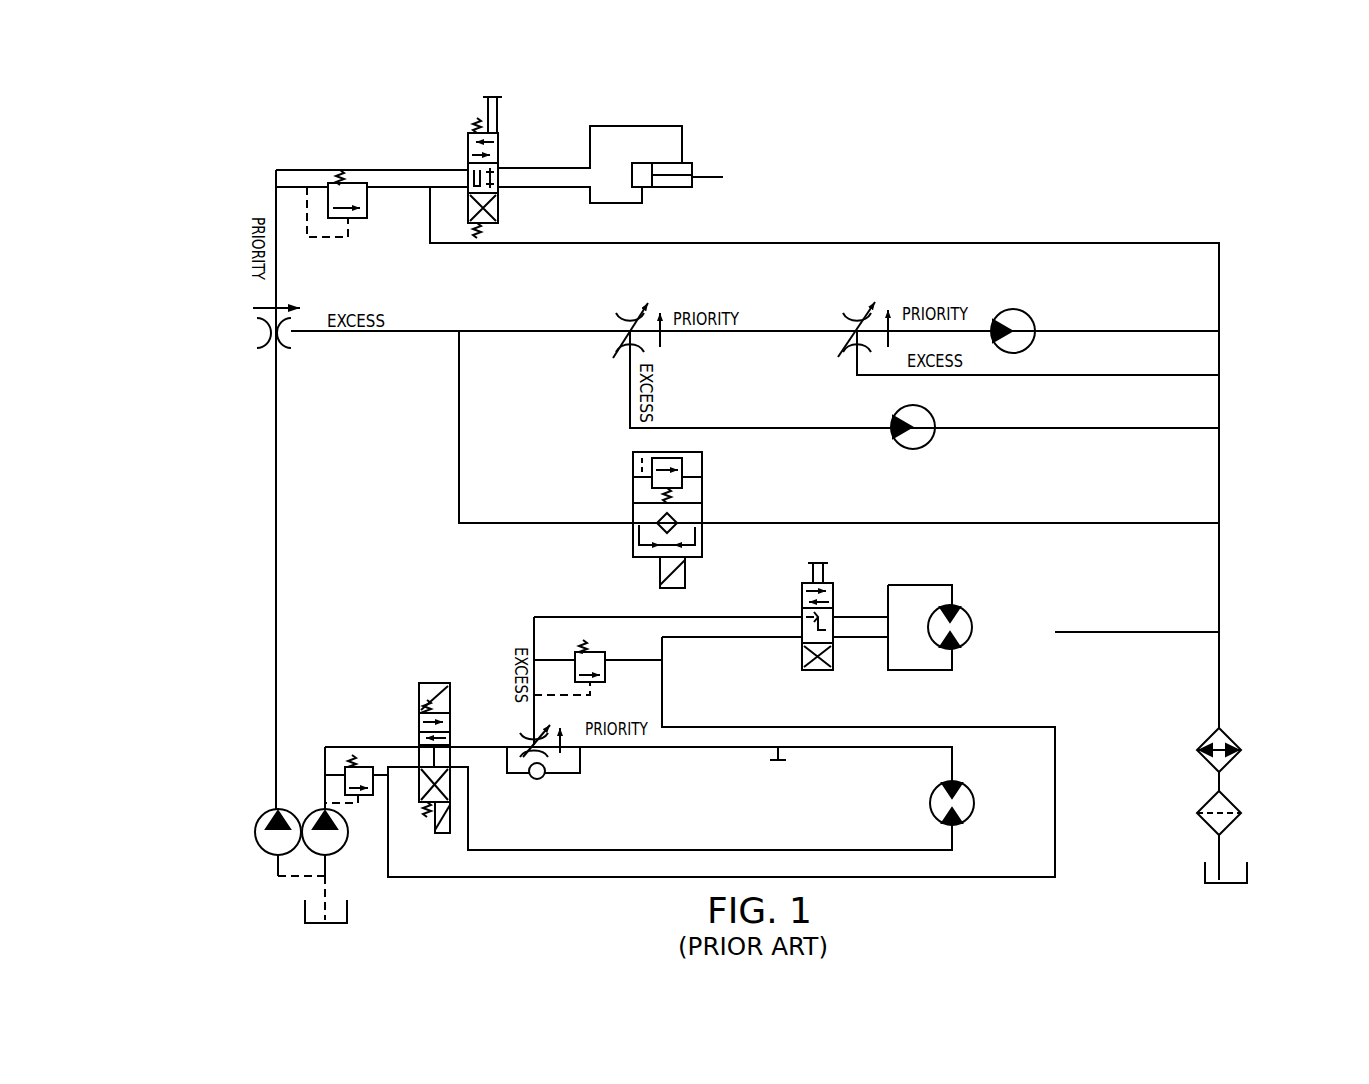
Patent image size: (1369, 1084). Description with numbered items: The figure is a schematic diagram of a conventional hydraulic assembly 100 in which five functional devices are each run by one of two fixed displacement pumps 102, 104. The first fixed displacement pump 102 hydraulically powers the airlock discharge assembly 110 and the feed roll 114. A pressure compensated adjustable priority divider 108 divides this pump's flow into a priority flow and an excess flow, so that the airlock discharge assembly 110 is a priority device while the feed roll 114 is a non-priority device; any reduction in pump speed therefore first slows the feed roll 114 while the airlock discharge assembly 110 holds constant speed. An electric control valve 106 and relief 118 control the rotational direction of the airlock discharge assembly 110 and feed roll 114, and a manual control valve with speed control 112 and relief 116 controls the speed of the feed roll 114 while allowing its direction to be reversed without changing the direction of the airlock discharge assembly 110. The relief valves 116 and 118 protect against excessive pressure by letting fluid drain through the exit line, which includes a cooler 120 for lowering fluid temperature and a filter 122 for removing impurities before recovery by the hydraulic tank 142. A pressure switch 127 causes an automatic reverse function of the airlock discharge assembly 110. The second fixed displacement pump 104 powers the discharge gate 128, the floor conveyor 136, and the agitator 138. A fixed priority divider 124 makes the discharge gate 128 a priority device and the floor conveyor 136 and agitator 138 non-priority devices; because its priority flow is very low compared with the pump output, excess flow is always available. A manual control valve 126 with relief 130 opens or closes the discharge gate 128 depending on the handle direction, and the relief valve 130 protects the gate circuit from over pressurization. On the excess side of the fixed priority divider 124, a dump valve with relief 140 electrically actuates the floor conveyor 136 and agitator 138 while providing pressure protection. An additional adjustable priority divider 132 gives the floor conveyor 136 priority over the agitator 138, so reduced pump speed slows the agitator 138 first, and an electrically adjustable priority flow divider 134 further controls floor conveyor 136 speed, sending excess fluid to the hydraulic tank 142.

The hydraulic assembly 100 is at (1253, 172).
The first fixed displacement pump 102 is at (281, 791).
The second fixed displacement pump 104 is at (210, 826).
The electric control valve 106 is at (385, 723).
The pressure compensated adjustable priority divider 108 is at (604, 771).
The airlock discharge assembly 110 is at (1022, 826).
The manual control valve with speed control 112 is at (873, 598).
The feed roll 114 is at (979, 605).
The relief valve 116 is at (537, 638).
The relief valve 118 is at (366, 835).
The cooler 120 is at (1266, 724).
The filter 122 is at (1270, 782).
The fixed priority divider 124 is at (321, 373).
The manual control valve 126 is at (533, 156).
The pressure switch 127 is at (837, 778).
The discharge gate 128 is at (709, 131).
The relief valve 130 is at (390, 226).
The adjustable priority divider 132 is at (696, 304).
The electrically adjustable priority flow divider 134 is at (914, 303).
The floor conveyor 136 is at (1076, 300).
The agitator 138 is at (973, 447).
The dump valve with relief 140 is at (722, 514).
The hydraulic tank 142 is at (763, 859).